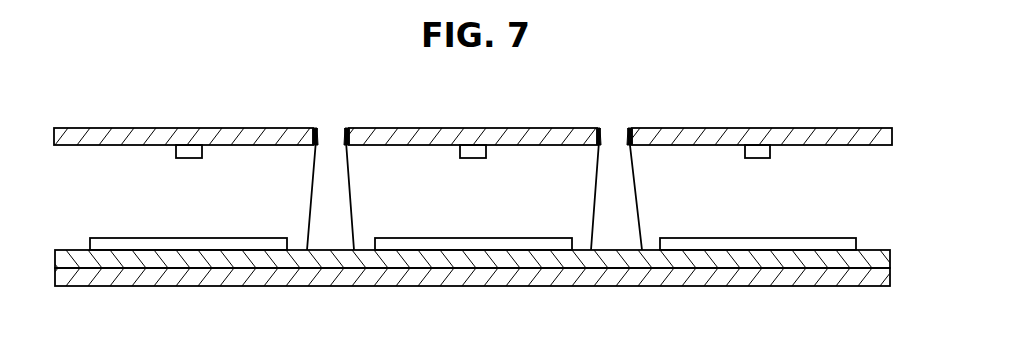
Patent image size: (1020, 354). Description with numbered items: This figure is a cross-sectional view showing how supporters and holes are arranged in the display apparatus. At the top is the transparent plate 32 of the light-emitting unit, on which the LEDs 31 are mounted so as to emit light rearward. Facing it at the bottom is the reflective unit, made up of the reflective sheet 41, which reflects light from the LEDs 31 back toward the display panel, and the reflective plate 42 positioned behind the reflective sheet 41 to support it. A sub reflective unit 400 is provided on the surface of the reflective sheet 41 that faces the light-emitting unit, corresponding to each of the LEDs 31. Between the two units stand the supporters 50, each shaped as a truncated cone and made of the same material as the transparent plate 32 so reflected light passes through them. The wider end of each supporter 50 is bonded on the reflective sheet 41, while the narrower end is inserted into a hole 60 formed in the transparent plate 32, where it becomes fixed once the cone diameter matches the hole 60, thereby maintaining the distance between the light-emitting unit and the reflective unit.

The transparent plate 32 is at (712, 129).
The LED 31 is at (770, 149).
The hole 60 is at (314, 129).
The supporter 50 is at (312, 190).
The sub reflective unit 400 is at (175, 238).
The reflective sheet 41 is at (871, 257).
The reflective plate 42 is at (882, 279).